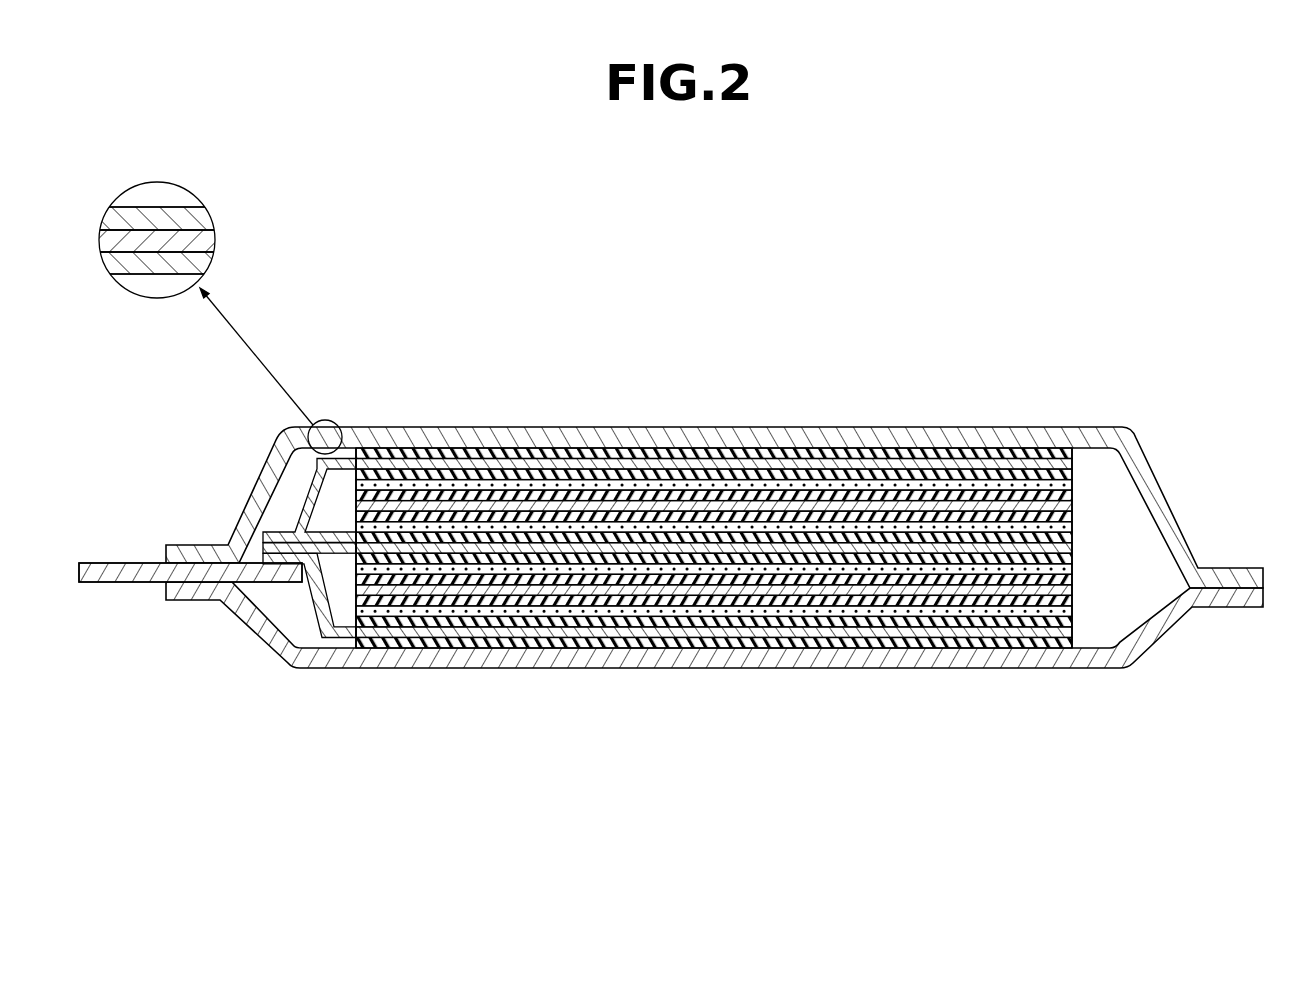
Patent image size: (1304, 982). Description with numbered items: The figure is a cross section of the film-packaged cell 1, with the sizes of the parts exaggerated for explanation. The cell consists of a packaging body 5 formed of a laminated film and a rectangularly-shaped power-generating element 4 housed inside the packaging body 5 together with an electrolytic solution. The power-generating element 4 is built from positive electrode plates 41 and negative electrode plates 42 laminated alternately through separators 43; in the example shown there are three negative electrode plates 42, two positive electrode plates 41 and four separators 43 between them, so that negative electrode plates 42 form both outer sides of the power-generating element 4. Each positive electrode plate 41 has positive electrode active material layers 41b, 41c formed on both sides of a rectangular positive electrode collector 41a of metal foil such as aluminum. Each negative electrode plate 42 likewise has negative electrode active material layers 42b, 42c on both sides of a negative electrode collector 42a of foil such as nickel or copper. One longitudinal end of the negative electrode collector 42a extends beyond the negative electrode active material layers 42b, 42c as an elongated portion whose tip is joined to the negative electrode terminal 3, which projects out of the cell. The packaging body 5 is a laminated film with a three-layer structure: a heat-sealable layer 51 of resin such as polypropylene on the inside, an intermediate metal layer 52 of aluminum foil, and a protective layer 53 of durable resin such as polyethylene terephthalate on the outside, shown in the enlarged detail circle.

The film-packaged cell 1 is at (1122, 310).
The negative electrode terminal 3 is at (102, 582).
The power-generating element 4 is at (692, 527).
The positive electrode plate 41 is at (592, 550).
The positive electrode collector 41a is at (356, 501).
The positive electrode active material layer 41b is at (356, 488).
The positive electrode active material layer 41c is at (356, 514).
The negative electrode plate 42 is at (731, 527).
The negative electrode collector 42a is at (992, 465).
The negative electrode active material layer 42b is at (945, 455).
The negative electrode active material layer 42c is at (1028, 473).
The separator 43 is at (603, 528).
The packaging body 5 is at (657, 400).
The heat-sealable layer 51 is at (160, 263).
The metal layer 52 is at (207, 243).
The protective layer 53 is at (195, 220).